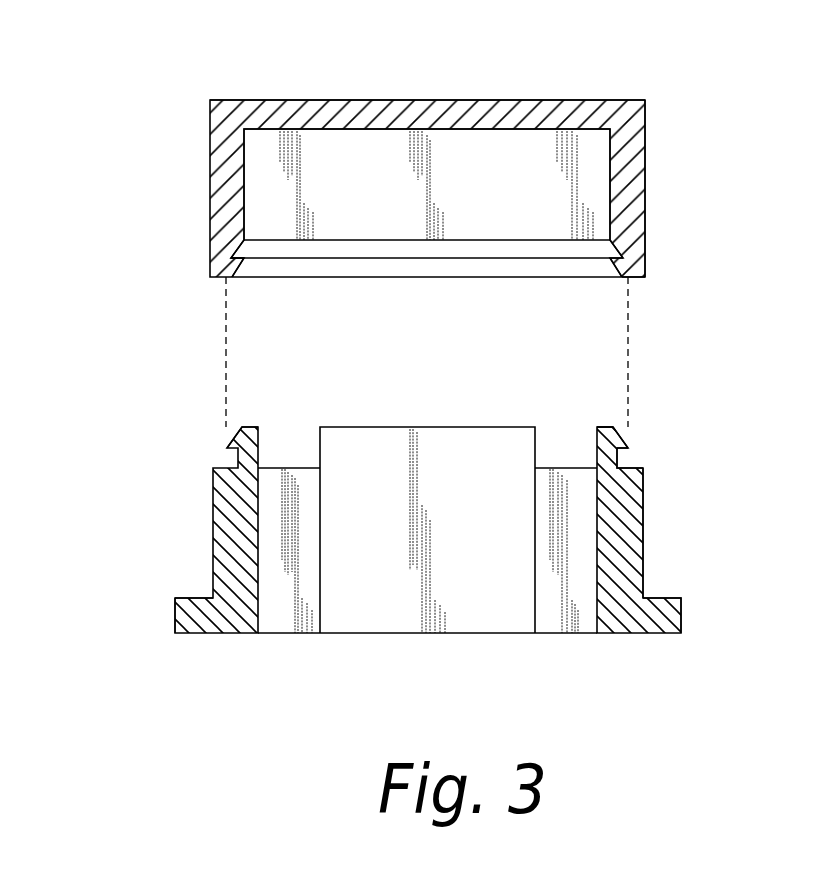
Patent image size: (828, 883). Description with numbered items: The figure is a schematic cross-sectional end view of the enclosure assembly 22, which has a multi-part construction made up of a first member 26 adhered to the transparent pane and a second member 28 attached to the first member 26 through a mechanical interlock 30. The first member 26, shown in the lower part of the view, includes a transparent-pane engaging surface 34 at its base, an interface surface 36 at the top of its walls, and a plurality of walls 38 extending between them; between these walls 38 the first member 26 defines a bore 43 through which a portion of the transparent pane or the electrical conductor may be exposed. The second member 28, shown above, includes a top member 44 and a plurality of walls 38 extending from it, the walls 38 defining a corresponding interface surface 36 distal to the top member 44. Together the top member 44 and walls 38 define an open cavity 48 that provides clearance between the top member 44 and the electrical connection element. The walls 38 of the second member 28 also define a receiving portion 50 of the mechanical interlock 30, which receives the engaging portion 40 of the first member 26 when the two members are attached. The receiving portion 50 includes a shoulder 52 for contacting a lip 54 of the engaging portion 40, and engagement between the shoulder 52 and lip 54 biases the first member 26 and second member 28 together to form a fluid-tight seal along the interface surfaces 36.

The enclosure assembly 22 is at (71, 69).
The first member 26 is at (178, 528).
The second member 28 is at (180, 187).
The mechanical interlock 30 is at (602, 272).
The transparent-pane engaging surface 34 is at (208, 645).
The interface surface 36 is at (642, 288).
The walls 38 is at (645, 137).
The engaging portion 40 is at (635, 430).
The bore 43 is at (305, 646).
The top member 44 is at (592, 100).
The open cavity 48 is at (322, 302).
The receiving portion 50 is at (295, 272).
The shoulder 52 is at (242, 257).
The lip 54 is at (228, 447).